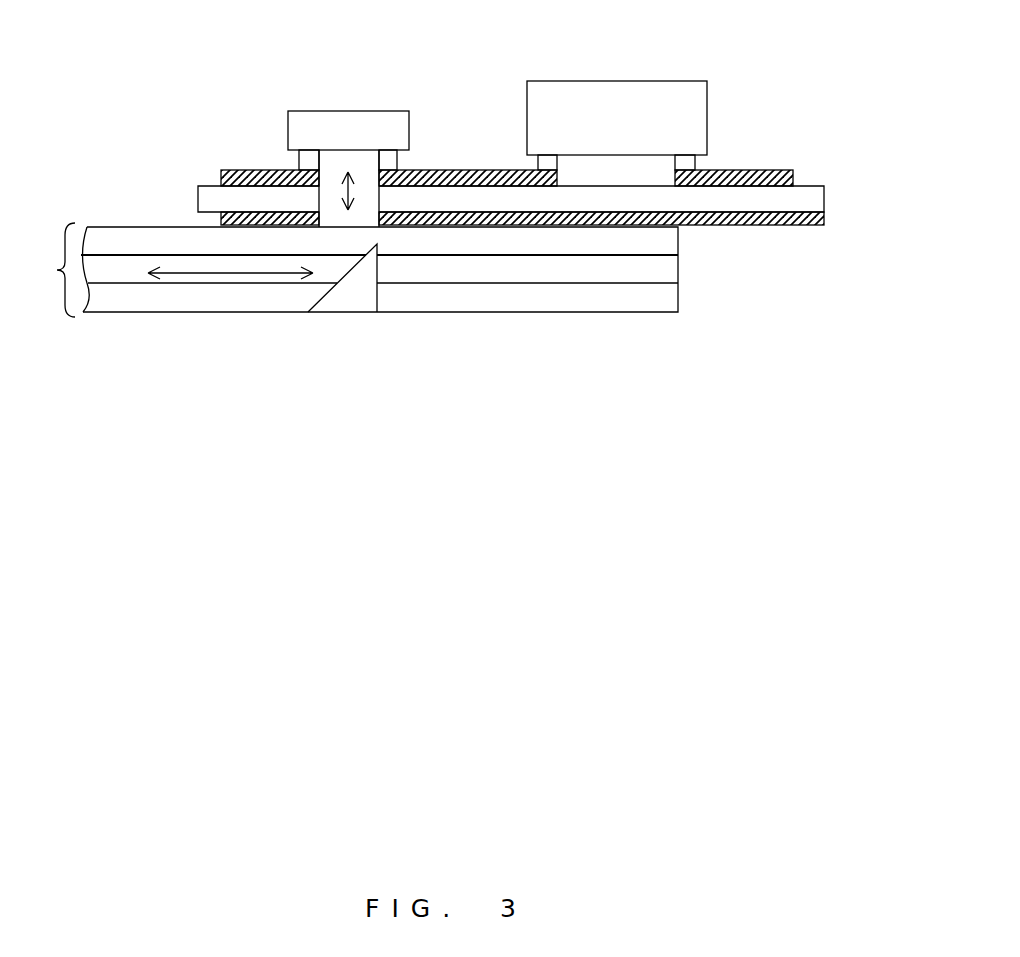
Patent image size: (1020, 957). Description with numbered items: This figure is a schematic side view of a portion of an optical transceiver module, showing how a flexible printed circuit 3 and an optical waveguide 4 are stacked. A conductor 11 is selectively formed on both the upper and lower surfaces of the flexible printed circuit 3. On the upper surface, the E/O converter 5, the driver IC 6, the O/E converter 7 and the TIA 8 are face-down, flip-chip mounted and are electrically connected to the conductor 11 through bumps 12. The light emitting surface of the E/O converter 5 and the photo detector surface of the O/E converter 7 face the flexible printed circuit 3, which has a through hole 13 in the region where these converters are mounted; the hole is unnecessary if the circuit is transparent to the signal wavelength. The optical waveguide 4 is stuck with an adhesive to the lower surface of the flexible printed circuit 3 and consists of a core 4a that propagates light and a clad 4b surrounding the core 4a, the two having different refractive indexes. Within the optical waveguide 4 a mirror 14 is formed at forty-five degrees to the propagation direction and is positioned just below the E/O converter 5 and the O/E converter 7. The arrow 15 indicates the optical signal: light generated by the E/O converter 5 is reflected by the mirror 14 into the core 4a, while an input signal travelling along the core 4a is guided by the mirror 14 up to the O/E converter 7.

The flexible printed circuit 3 is at (826, 200).
The optical waveguide 4 is at (392, 287).
The core 4a is at (668, 272).
The clad 4b is at (668, 242).
The E/O converter 5 is at (348, 101).
The driver IC 6 is at (617, 89).
The O/E converter 7 is at (362, 110).
The TIA 8 is at (627, 80).
The conductor 11 is at (793, 175).
The bump 12 is at (299, 157).
The through hole 13 is at (372, 201).
The mirror 14 is at (348, 303).
The arrow 15 is at (343, 192).